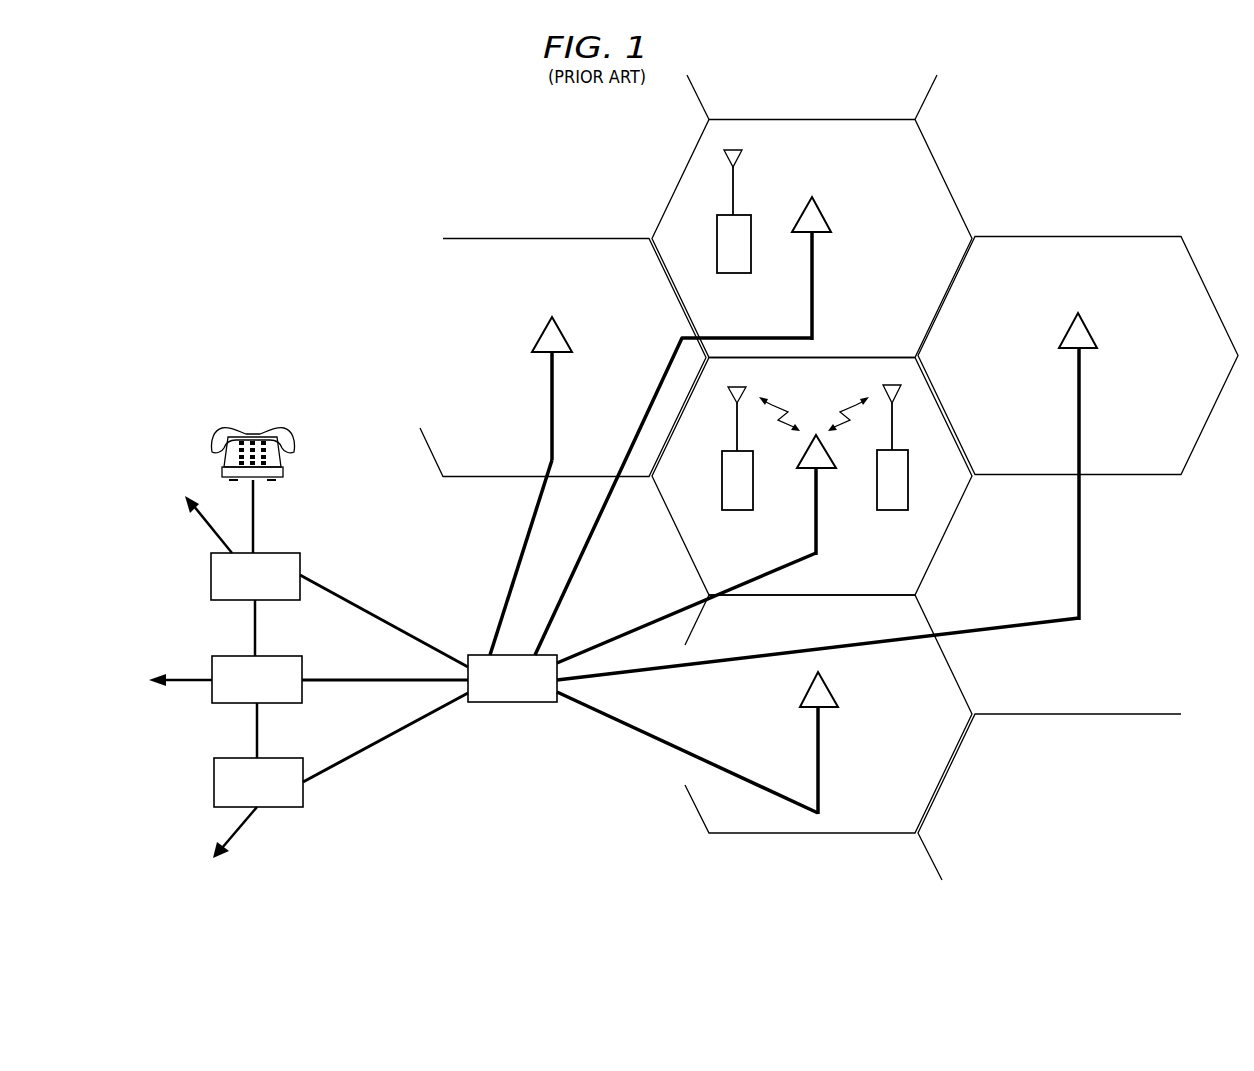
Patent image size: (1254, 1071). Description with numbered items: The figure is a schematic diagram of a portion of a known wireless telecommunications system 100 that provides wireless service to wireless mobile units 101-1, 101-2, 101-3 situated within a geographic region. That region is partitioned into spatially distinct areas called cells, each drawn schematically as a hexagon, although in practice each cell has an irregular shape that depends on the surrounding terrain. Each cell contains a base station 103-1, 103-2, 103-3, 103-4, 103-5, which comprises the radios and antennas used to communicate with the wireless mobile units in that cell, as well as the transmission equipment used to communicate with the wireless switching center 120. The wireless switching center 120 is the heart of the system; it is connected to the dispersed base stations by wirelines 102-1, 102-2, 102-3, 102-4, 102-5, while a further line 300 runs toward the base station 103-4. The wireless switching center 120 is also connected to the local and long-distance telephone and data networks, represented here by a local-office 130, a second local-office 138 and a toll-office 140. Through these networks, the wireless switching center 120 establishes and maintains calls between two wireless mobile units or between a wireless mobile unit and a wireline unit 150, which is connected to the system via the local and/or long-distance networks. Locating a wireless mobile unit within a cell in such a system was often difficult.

The wireless telecommunications system 100 is at (322, 233).
The wireless switching center 120 is at (512, 702).
The wireline mobile unit 150 is at (253, 424).
The local-office 130 is at (211, 565).
The toll-office 140 is at (212, 668).
The local-office 138 is at (214, 772).
The wireline 102-1 is at (620, 637).
The wireline 102-2 is at (583, 550).
The wireline 102-3 is at (515, 572).
The wireline 102-4 is at (623, 670).
The wireline 102-5 is at (618, 720).
The wireline to base station 103-4 300 is at (775, 652).
The base station 103-1 is at (819, 526).
The base station 103-2 is at (815, 276).
The base station 103-3 is at (555, 396).
The base station 103-4 is at (1082, 393).
The base station 103-5 is at (821, 753).
The wireless mobile unit 101-1 is at (737, 510).
The wireless mobile unit 101-2 is at (892, 510).
The wireless mobile unit 101-3 is at (733, 273).